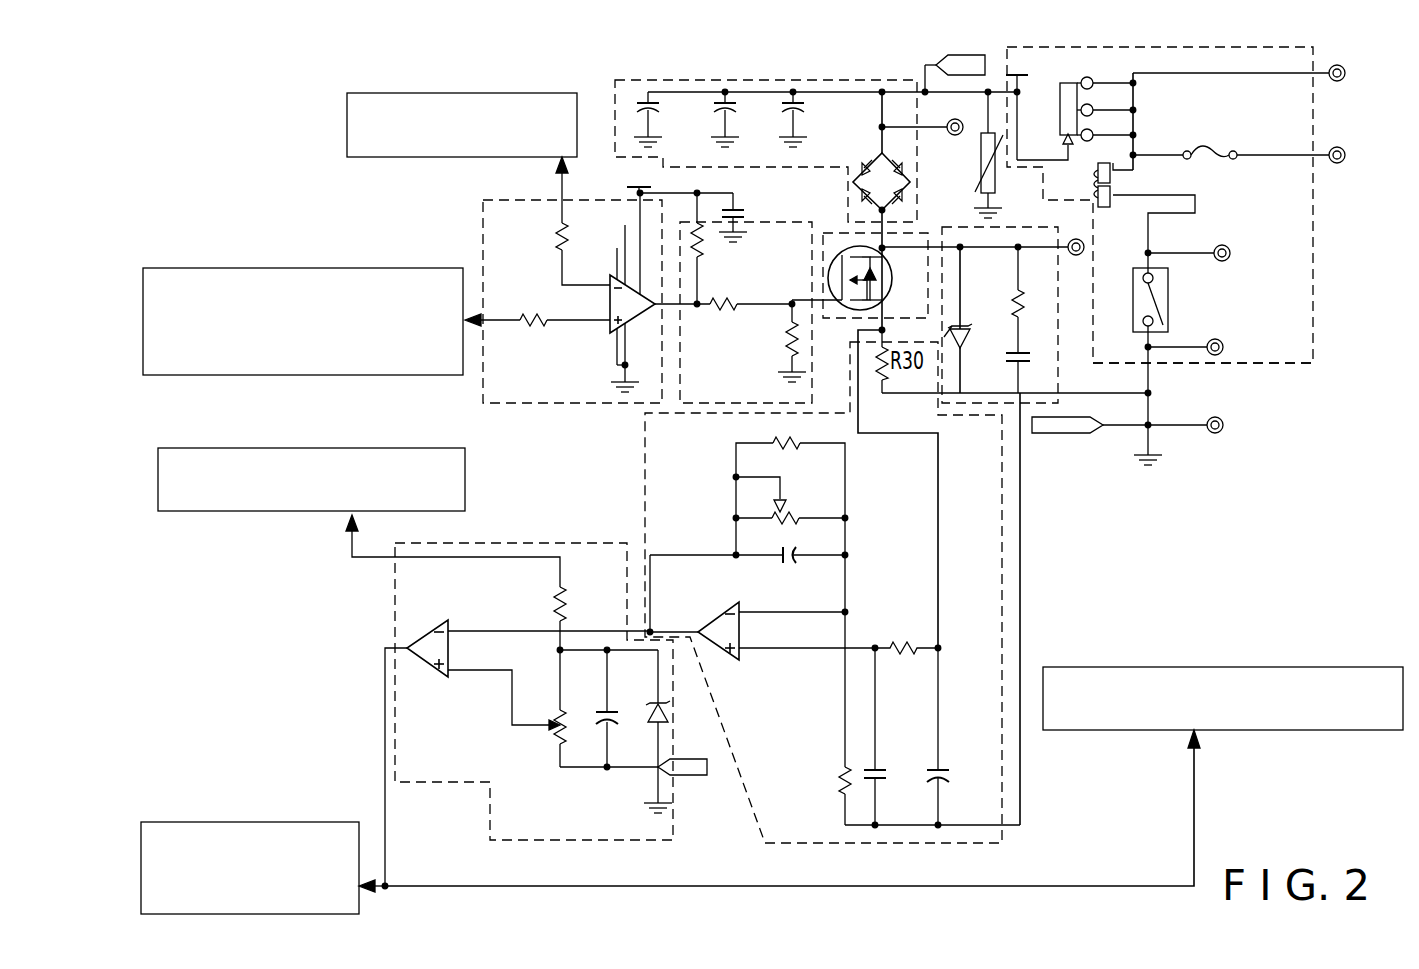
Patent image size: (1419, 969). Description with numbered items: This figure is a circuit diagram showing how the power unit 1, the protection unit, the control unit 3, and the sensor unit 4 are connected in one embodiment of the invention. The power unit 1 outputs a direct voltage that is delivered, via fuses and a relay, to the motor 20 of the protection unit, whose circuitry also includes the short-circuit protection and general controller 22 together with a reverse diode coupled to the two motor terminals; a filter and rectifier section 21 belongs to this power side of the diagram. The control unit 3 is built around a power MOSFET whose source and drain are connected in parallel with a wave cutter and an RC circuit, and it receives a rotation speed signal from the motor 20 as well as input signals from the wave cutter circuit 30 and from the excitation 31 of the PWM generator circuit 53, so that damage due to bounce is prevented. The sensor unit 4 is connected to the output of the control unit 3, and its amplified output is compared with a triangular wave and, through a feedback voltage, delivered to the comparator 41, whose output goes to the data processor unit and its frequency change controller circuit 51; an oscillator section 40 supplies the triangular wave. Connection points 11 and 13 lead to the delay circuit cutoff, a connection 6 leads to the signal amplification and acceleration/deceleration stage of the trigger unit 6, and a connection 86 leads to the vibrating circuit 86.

The power unit 1 is at (1348, 222).
The control unit 3 is at (843, 243).
The sensor unit 4 is at (928, 808).
The trigger unit 6 is at (238, 365).
The delay circuit cutoff connection point 11 is at (282, 828).
The delay circuit cutoff connection point 13 is at (254, 504).
The motor 20 is at (987, 152).
The power filter and rectifier circuit 21 is at (627, 95).
The short-circuit protection and general controller 22 is at (1267, 357).
The wave cutter circuit 30 is at (985, 397).
The excitation 31 is at (698, 377).
The oscillator circuit 40 is at (957, 565).
The comparator 41 is at (590, 820).
The frequency change controller circuit 51 is at (1193, 677).
The PWM generator circuit 53 is at (567, 388).
The vibrating circuit 86 is at (488, 157).